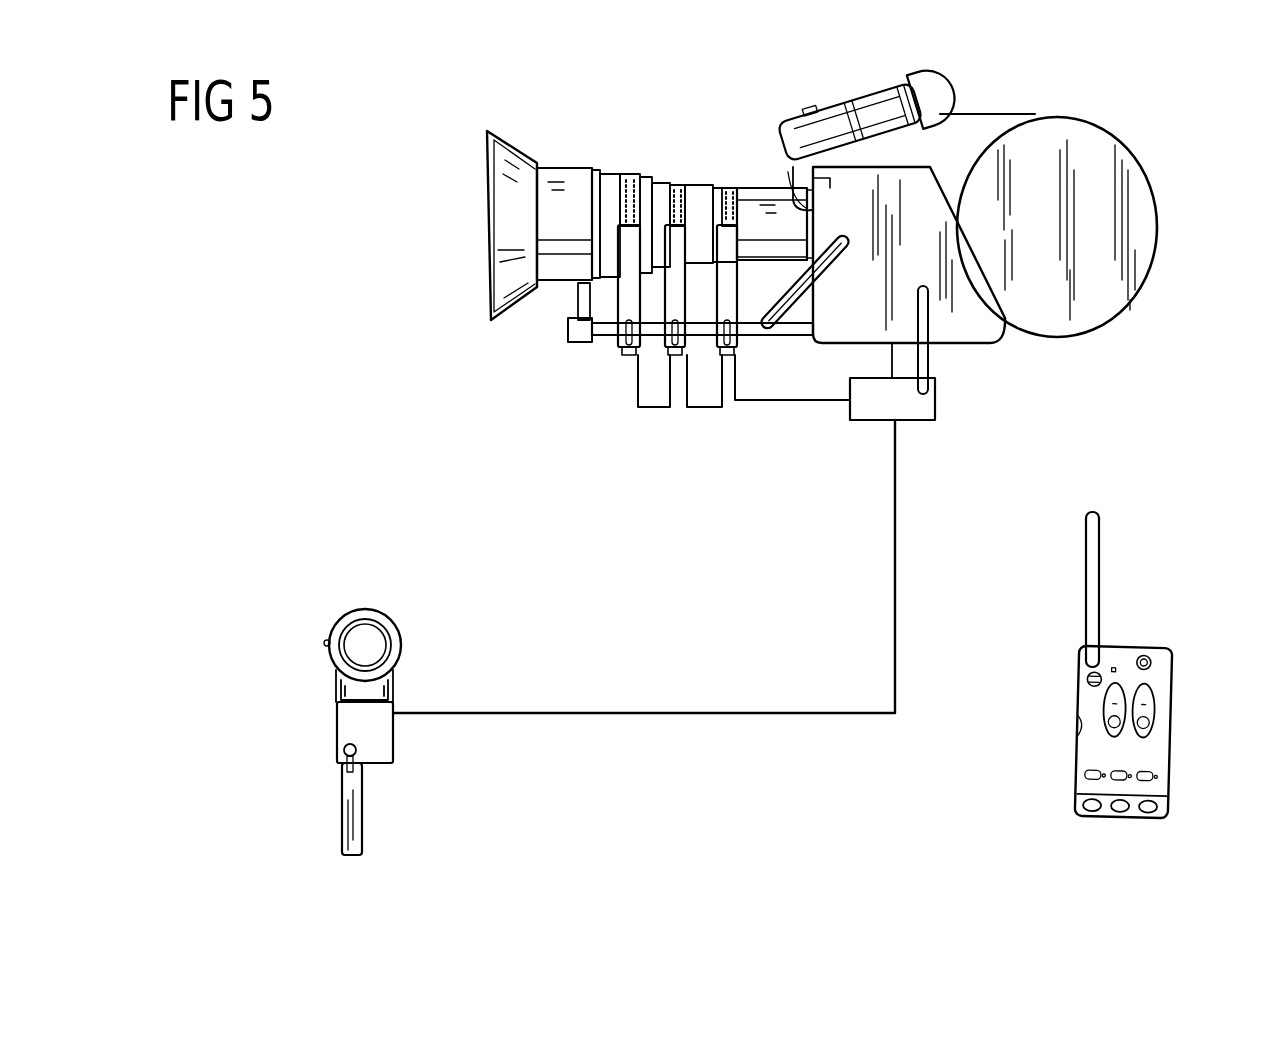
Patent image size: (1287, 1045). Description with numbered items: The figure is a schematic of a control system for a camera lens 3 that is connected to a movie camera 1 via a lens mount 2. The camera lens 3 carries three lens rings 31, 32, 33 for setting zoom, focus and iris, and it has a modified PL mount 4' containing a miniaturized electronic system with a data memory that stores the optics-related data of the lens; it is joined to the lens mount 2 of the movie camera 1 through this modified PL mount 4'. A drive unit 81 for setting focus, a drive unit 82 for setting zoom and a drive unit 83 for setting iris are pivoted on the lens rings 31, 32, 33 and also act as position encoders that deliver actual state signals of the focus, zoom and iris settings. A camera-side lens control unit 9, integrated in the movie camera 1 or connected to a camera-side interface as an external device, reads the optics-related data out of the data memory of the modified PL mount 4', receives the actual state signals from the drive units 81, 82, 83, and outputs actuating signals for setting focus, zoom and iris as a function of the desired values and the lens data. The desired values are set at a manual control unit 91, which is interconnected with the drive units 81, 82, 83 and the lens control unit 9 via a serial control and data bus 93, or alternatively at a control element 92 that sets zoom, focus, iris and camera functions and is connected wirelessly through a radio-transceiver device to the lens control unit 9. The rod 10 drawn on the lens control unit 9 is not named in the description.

The movie camera 1 is at (976, 113).
The lens mount 2 is at (828, 175).
The camera lens 3 is at (553, 166).
The lens ring 31 is at (627, 172).
The lens ring 32 is at (676, 187).
The lens ring 33 is at (730, 190).
The modified PL mount 4' is at (862, 107).
The drive unit for setting focus 81 is at (617, 340).
The drive unit for setting zoom 82 is at (660, 345).
The drive unit for setting iris 83 is at (718, 345).
The camera-side lens control unit 9 is at (927, 416).
The antenna 10 is at (932, 333).
The manual control unit 91 is at (378, 737).
The control element 92 is at (1158, 733).
The serial control and data bus 93 is at (685, 717).